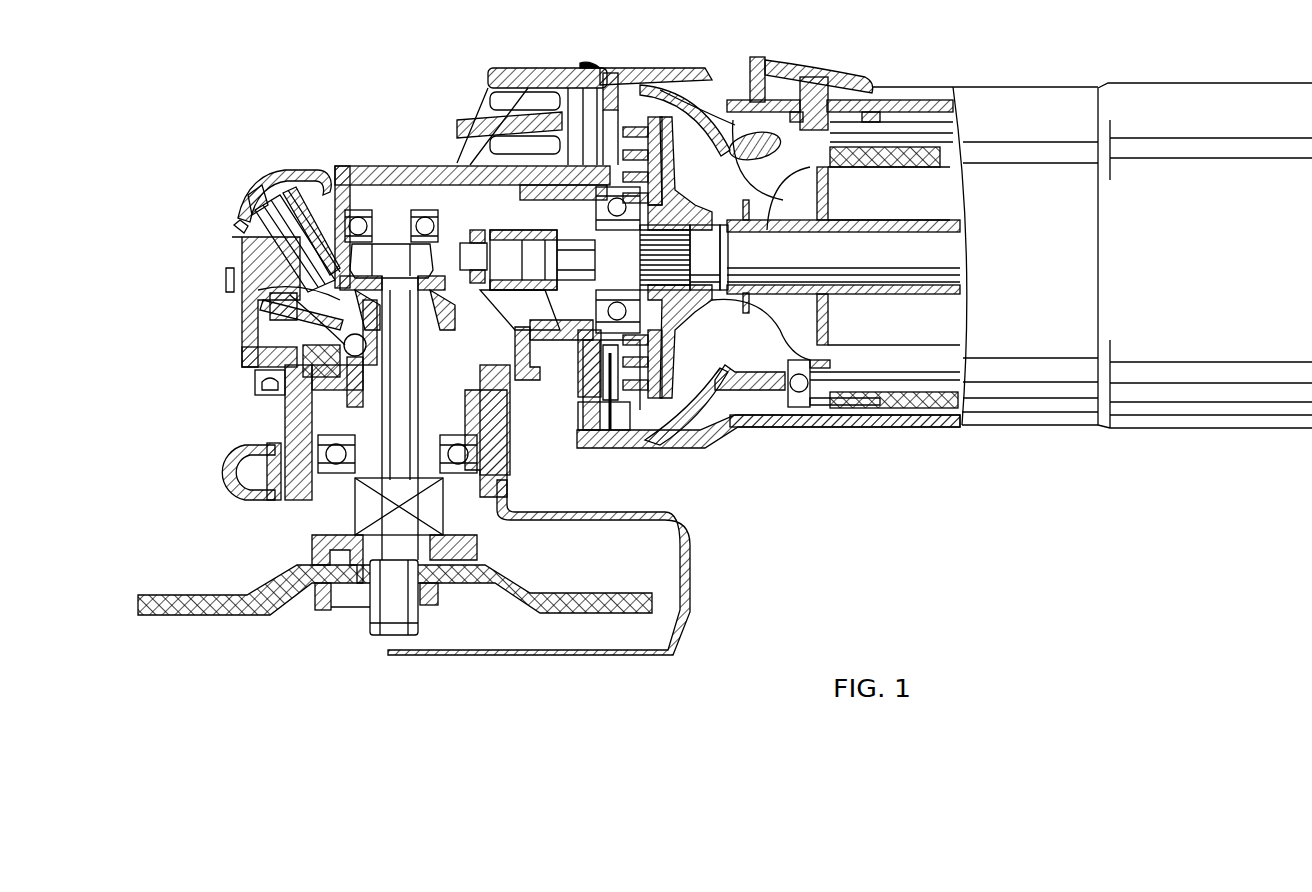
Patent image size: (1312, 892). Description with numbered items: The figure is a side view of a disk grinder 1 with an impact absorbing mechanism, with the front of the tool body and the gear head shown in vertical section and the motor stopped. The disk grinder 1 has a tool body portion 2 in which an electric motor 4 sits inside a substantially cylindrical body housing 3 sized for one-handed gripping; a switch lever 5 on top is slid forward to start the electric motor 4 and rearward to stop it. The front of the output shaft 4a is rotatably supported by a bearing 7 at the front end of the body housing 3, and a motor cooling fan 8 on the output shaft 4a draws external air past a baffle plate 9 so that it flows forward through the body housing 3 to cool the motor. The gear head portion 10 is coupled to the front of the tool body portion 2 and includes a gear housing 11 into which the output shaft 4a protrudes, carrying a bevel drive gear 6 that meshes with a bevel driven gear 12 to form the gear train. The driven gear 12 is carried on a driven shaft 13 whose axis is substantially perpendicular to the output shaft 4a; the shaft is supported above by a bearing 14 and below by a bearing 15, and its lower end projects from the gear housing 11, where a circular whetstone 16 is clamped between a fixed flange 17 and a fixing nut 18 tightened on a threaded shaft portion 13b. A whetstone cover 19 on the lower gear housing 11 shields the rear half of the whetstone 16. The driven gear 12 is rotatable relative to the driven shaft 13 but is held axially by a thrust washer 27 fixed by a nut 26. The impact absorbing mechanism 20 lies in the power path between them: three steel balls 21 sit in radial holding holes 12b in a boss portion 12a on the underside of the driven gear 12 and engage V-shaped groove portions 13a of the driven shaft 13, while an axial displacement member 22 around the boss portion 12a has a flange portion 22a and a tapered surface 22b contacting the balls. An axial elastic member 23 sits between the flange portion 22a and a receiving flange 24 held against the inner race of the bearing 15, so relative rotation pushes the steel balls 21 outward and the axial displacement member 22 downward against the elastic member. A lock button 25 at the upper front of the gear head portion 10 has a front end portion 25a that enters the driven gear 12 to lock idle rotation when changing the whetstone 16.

The disk grinder 1 is at (815, 492).
The tool body portion 2 is at (978, 82).
The body housing 3 is at (1050, 98).
The electric motor 4 is at (890, 330).
The output shaft 4a is at (575, 245).
The switch lever 5 is at (812, 77).
The drive gear 6 is at (518, 200).
The bearing 7 is at (620, 200).
The motor cooling fan 8 is at (692, 68).
The baffle plate 9 is at (690, 432).
The gear head portion 10 is at (270, 160).
The gear housing 11 is at (385, 275).
The driven gear 12 is at (255, 260).
The boss portion 12a is at (500, 462).
The holding holes 12b is at (398, 262).
The driven shaft 13 is at (310, 442).
The groove portions 13a is at (378, 330).
The threaded shaft portion 13b is at (380, 622).
The bearing 14 is at (428, 225).
The bearing 15 is at (228, 480).
The whetstone 16 is at (232, 617).
The fixed flange 17 is at (310, 542).
The fixing nut 18 is at (320, 612).
The whetstone cover 19 is at (692, 580).
The impact absorbing mechanism 20 is at (512, 506).
The steel balls 21 is at (310, 292).
The axial displacement member 22 is at (510, 395).
The flange portion 22a is at (315, 345).
The tapered surface 22b is at (452, 330).
The axial elastic member 23 is at (317, 368).
The receiving flange 24 is at (337, 380).
The lock button 25 is at (262, 200).
The front end portion 25a is at (243, 230).
The nut 26 is at (355, 230).
The thrust washer 27 is at (297, 225).